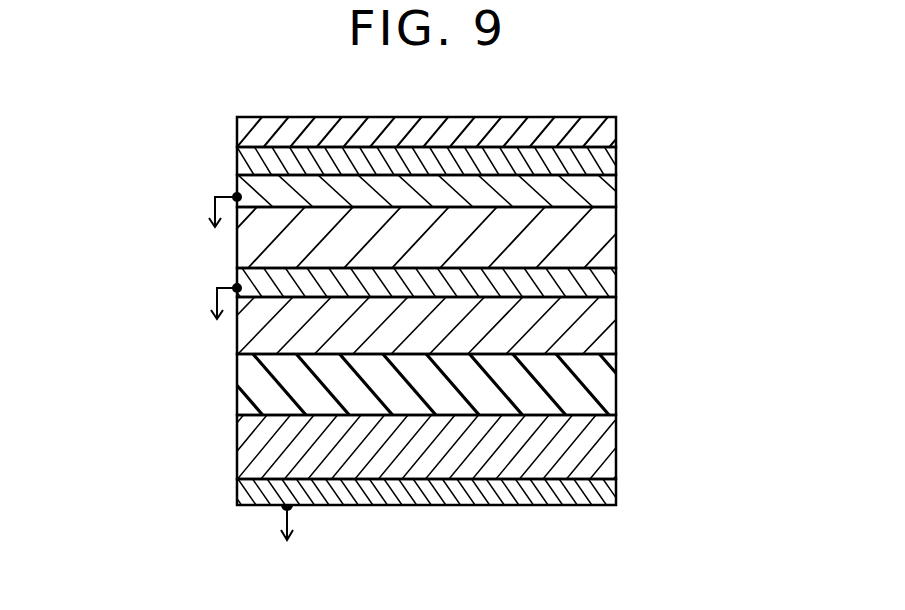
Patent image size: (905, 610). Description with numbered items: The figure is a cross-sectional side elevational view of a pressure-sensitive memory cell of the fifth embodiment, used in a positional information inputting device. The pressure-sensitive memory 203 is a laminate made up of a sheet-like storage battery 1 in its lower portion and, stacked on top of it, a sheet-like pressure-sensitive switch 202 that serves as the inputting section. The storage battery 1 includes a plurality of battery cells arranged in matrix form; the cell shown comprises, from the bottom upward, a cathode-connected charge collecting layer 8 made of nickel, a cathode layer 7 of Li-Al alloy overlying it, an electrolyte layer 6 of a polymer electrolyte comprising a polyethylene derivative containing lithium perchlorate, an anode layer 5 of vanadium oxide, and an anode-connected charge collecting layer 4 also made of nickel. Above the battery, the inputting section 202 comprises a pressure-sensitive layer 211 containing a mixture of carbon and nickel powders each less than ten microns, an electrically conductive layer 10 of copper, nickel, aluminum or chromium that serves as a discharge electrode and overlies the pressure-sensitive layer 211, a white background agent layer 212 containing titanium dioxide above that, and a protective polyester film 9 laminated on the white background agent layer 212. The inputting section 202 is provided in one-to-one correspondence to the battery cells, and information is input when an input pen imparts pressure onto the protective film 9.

The sheet-like storage battery 1 is at (197, 270).
The anode-connected charge collecting layer 4 is at (598, 276).
The anode layer 5 is at (605, 336).
The electrolyte layer 6 is at (603, 379).
The cathode layer 7 is at (603, 443).
The cathode-connected charge collecting layer 8 is at (603, 490).
The protective film 9 is at (603, 133).
The electrically conductive layer 10 is at (603, 188).
The sheet-like pressure-sensitive switch 202 is at (195, 110).
The pressure-sensitive memory 203 is at (108, 178).
The pressure-sensitive layer 211 is at (598, 232).
The white background agent layer 212 is at (600, 160).